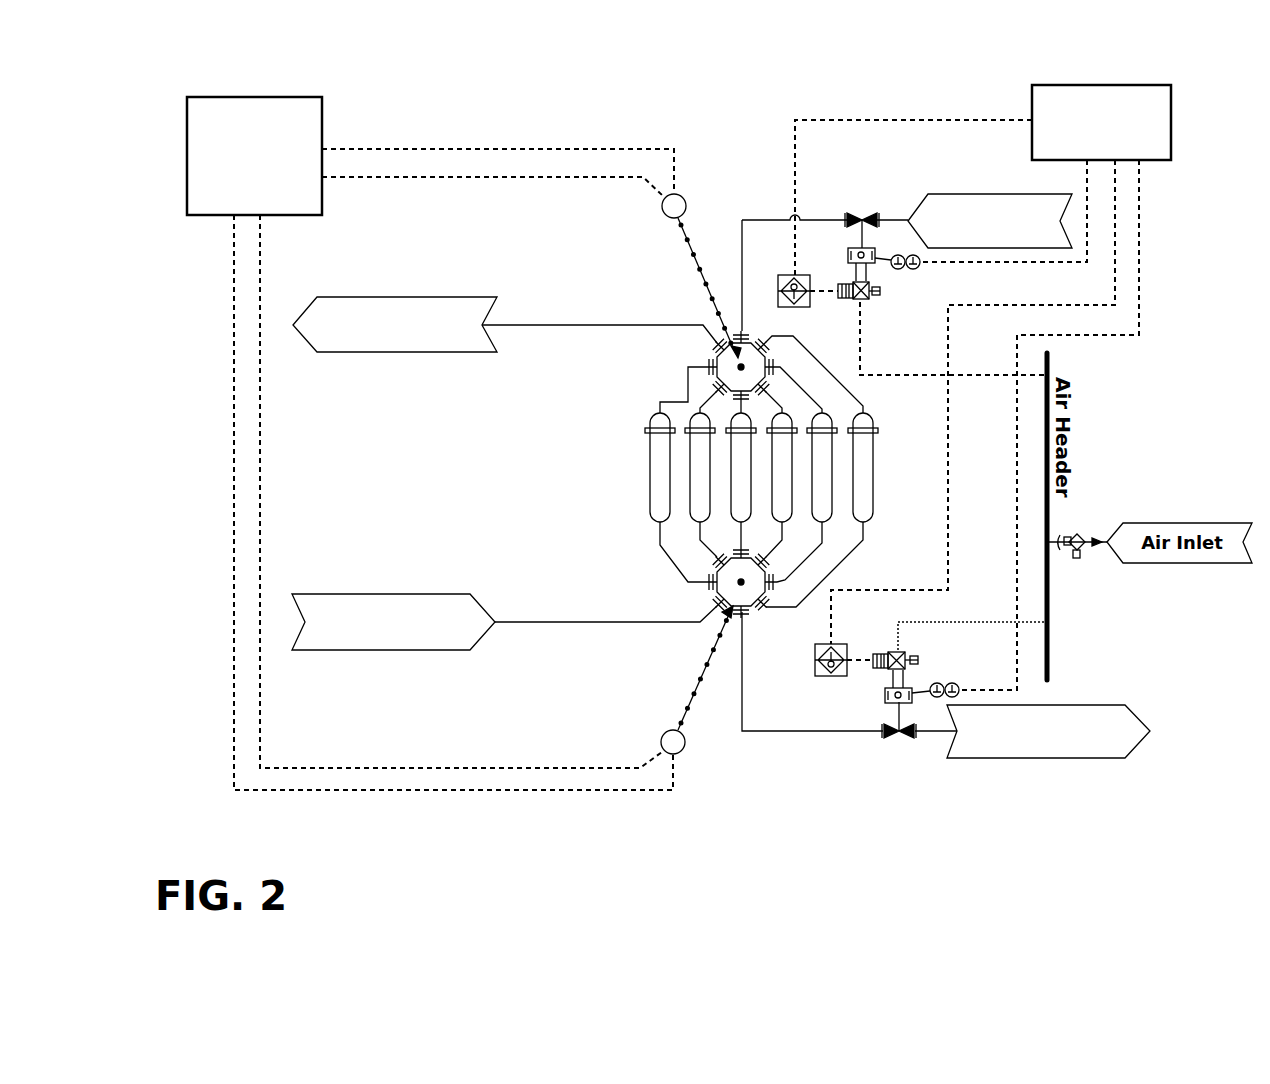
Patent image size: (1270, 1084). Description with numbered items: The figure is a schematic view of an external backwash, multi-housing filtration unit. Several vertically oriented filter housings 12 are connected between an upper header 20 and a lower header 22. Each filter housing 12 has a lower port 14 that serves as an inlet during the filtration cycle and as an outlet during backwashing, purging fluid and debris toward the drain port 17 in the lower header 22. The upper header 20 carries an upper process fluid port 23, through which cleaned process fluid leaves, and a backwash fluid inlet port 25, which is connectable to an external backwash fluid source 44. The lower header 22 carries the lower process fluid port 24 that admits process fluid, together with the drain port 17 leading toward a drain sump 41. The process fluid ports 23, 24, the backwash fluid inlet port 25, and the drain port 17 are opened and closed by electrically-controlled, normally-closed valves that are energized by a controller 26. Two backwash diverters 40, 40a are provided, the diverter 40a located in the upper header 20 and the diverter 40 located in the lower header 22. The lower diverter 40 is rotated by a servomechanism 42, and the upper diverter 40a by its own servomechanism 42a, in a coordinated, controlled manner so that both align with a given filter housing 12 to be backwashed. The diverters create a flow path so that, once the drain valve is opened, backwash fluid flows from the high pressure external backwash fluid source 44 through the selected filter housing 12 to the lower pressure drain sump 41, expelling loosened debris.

The filter housing 12 is at (652, 477).
The lower port 14 is at (690, 578).
The drain port 17 is at (895, 737).
The upper header 20 is at (703, 352).
The lower header 22 is at (711, 627).
The upper process fluid port 23 is at (610, 323).
The lower process fluid port 24 is at (635, 622).
The backwash fluid inlet port 25 is at (862, 213).
The controller 26 is at (322, 113).
The backwash diverter 40 is at (760, 620).
The backwash diverter 40a is at (747, 347).
The drain sump 41 is at (1110, 705).
The servomechanism 42 is at (685, 743).
The servomechanism 42a is at (687, 202).
The external backwash fluid source 44 is at (947, 193).